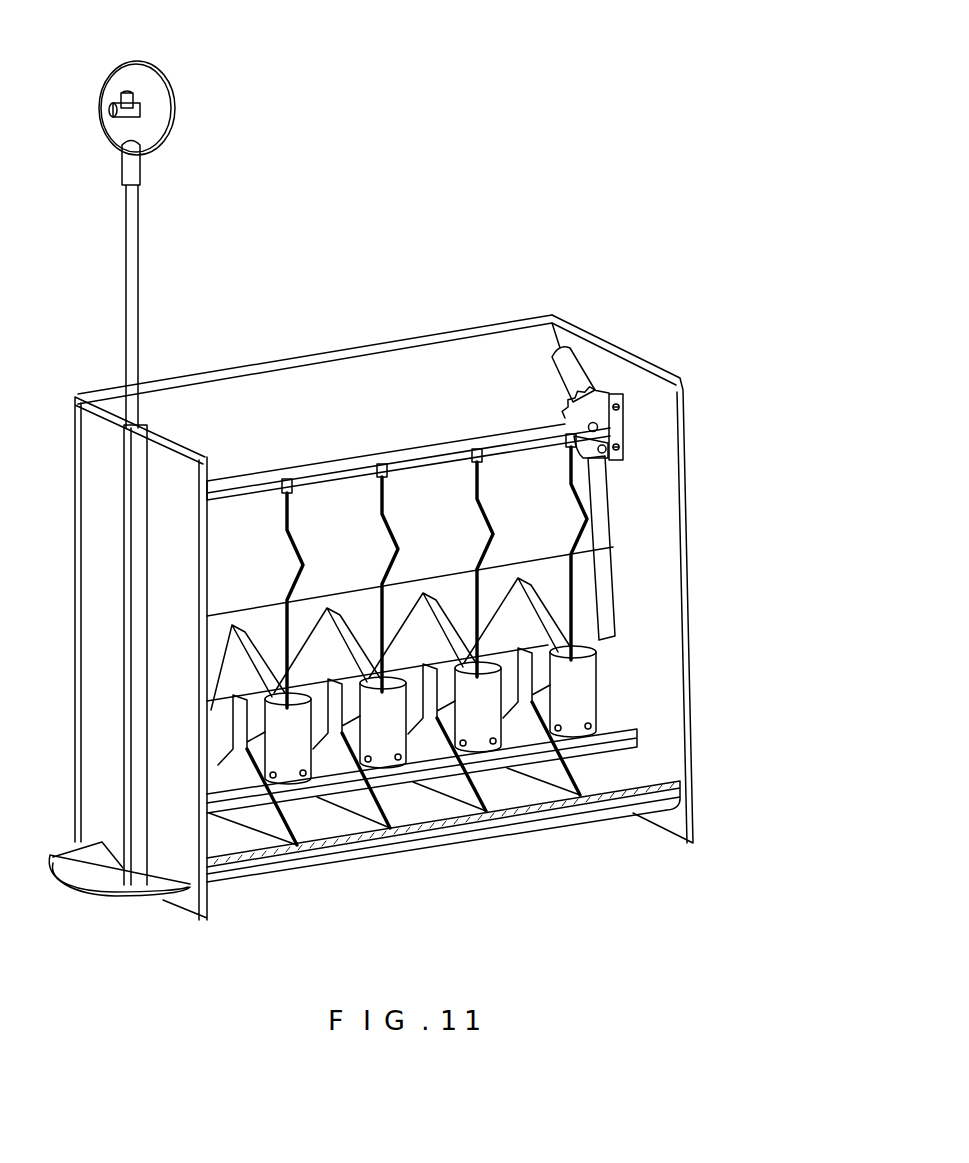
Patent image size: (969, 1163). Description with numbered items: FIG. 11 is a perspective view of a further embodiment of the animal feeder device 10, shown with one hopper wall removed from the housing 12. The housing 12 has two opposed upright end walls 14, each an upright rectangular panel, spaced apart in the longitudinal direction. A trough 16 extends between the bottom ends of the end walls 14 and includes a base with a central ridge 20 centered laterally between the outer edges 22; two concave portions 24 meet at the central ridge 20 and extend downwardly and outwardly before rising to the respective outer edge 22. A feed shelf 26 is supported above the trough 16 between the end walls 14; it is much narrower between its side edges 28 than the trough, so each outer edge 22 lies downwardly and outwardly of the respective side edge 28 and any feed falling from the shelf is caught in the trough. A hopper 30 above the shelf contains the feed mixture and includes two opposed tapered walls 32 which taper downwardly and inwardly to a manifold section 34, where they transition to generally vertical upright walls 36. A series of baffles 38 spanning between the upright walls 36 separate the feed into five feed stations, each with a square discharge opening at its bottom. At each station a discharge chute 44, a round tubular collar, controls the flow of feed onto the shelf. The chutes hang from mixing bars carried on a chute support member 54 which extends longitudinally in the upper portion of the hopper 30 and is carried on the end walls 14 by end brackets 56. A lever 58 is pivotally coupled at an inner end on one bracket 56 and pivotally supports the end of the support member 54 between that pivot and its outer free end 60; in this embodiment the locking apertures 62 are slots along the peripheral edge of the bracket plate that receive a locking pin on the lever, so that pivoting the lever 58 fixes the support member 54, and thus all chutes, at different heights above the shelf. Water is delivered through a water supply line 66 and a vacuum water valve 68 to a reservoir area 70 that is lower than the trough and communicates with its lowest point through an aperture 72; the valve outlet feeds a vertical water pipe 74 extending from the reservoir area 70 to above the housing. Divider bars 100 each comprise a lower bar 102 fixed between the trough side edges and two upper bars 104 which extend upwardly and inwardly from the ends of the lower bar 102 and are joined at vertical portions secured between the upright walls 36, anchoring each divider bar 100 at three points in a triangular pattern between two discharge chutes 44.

The animal feeder device 10 is at (436, 180).
The housing 12 is at (716, 490).
The end wall 14 is at (100, 607).
The trough 16 is at (284, 886).
The central ridge 20 is at (531, 801).
The outer edge 22 is at (490, 796).
The concave portion 24 is at (608, 778).
The feed shelf 26 is at (610, 723).
The side edge 28 is at (607, 720).
The hopper 30 is at (494, 381).
The tapered wall 32 is at (375, 369).
The manifold section 34 is at (645, 612).
The upright wall 36 is at (590, 567).
The baffle 38 is at (607, 588).
The discharge chute 44 is at (575, 687).
The chute support member 54 is at (335, 470).
The end bracket 56 is at (640, 383).
The lever 58 is at (598, 397).
The outer free end 60 is at (570, 362).
The locking aperture 62 is at (620, 392).
The water supply line 66 is at (118, 100).
The vacuum water valve 68 is at (172, 93).
The reservoir area 70 is at (107, 791).
The aperture 72 is at (184, 866).
The water pipe 74 is at (138, 259).
The divider bar 100 is at (368, 822).
The lower bar 102 is at (443, 805).
The upper bar 104 is at (514, 798).